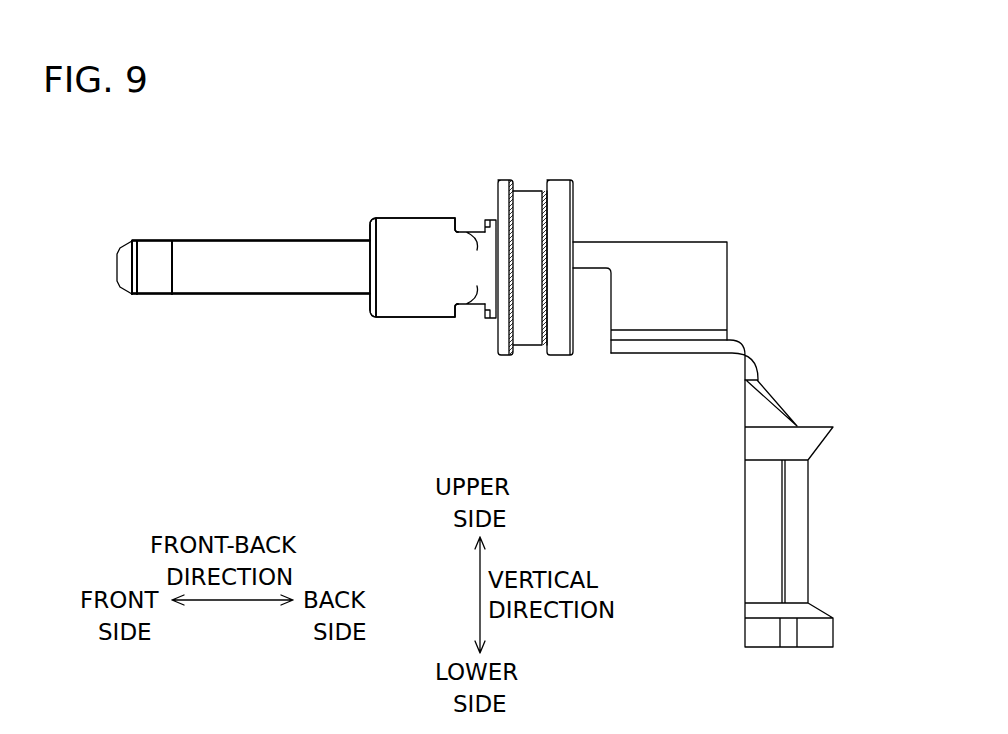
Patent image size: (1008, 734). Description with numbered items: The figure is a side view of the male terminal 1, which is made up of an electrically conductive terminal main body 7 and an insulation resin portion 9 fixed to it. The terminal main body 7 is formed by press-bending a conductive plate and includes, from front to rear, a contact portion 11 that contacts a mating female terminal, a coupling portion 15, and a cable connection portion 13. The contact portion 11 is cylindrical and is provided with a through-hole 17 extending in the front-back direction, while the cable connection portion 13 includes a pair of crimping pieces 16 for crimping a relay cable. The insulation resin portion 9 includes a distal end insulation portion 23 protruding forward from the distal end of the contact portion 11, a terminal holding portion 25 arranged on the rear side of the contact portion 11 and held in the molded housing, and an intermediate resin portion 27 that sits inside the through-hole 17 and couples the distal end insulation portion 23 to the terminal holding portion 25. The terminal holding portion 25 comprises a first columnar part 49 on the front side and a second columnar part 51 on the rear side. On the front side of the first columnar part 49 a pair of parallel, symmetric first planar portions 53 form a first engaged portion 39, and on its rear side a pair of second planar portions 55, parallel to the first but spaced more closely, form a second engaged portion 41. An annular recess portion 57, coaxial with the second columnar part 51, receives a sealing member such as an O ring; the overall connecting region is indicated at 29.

The male terminal 1 is at (290, 232).
The terminal main body 7 is at (288, 294).
The insulation resin portion 9 is at (270, 252).
The contact portion 11 is at (200, 240).
The cable connection portion 13 is at (728, 534).
The coupling portion 15 is at (620, 241).
The crimping pieces 16 is at (810, 519).
The through-hole 17 is at (215, 278).
The distal end insulation portion 23 is at (154, 286).
The terminal holding portion 25 is at (407, 292).
The intermediate resin portion 27 is at (251, 312).
The flange portion 29 is at (413, 200).
The first engaged portion 39 is at (383, 217).
The second engaged portion 41 is at (463, 232).
The first columnar part 49 is at (372, 228).
The second columnar part 51 is at (576, 196).
The first planar portions 53 is at (433, 217).
The second planar portions 55 is at (485, 224).
The annular recess portion 57 is at (528, 332).